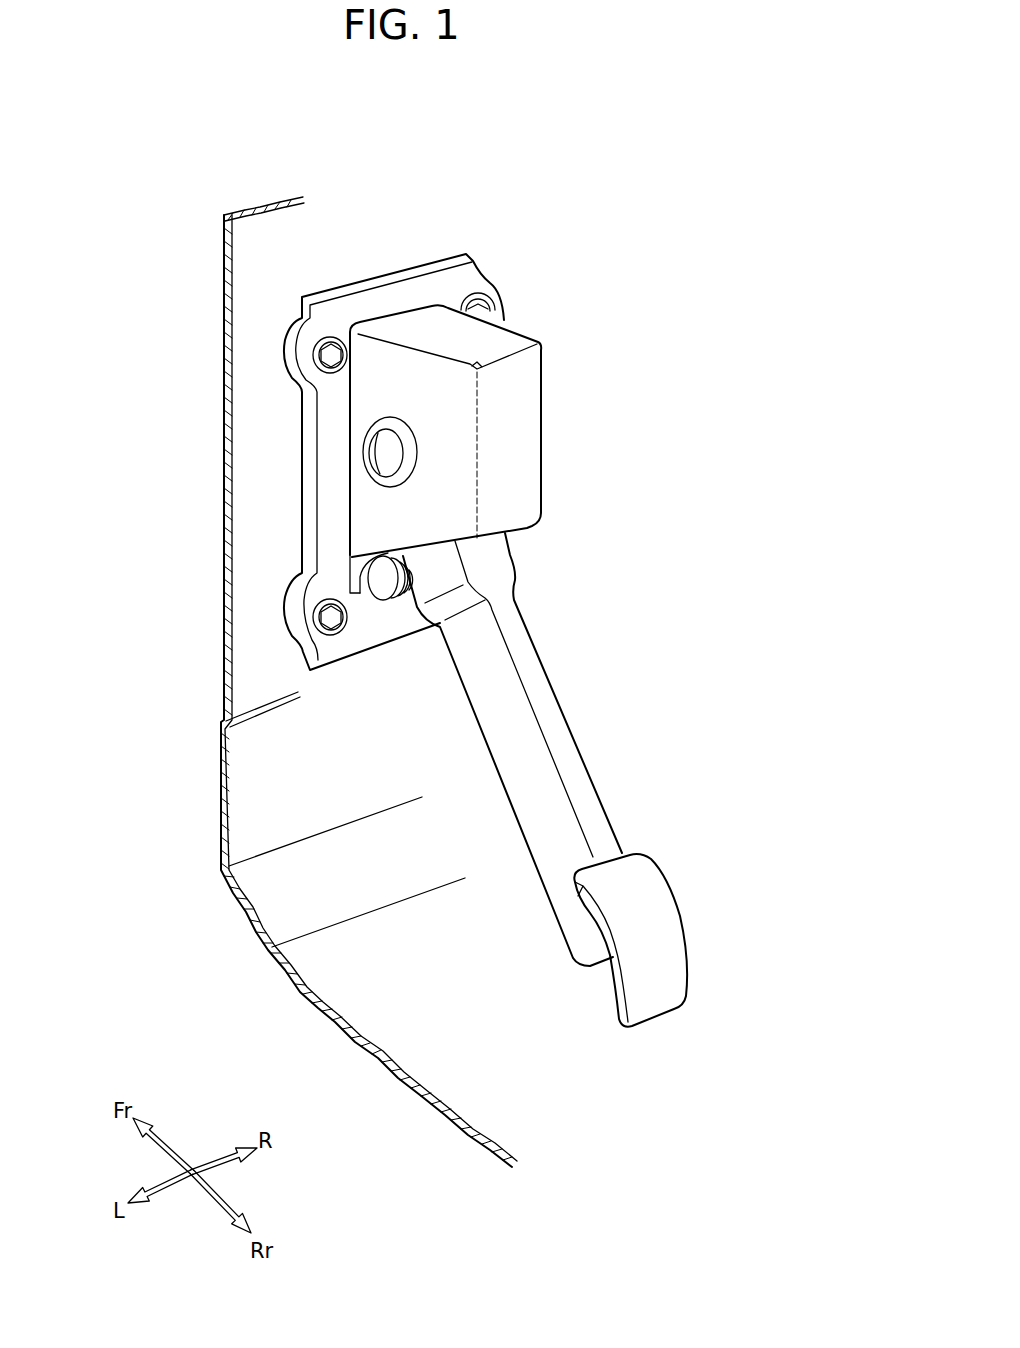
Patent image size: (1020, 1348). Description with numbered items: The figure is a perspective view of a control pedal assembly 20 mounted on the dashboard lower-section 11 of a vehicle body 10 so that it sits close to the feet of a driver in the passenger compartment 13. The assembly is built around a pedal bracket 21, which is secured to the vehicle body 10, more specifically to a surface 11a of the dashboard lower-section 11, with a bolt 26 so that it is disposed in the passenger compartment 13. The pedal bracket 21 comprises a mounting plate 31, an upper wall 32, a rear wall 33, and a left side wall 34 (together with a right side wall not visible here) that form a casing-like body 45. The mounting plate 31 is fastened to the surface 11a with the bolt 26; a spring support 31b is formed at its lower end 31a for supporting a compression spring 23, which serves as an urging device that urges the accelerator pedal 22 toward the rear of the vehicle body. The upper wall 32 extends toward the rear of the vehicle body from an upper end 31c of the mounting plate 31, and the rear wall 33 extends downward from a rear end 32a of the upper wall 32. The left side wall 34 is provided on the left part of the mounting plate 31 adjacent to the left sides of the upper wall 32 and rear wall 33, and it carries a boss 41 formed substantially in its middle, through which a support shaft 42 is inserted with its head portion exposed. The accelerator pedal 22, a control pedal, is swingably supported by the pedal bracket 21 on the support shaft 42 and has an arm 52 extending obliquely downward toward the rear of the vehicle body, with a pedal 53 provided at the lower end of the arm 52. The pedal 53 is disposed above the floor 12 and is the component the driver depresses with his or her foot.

The vehicle body 10 is at (592, 130).
The dashboard lower-section 11 is at (240, 330).
The surface 11a is at (267, 347).
The floor 12 is at (412, 1062).
The passenger compartment 13 is at (731, 668).
The control pedal assembly 20 is at (536, 280).
The pedal bracket 21 is at (553, 373).
The accelerator pedal 22 is at (582, 780).
The compression spring 23 is at (399, 606).
The bolt 26 is at (336, 352).
The mounting plate 31 is at (330, 413).
The lower end 31a is at (421, 625).
The spring support 31b is at (377, 603).
The upper end 31c is at (388, 303).
The upper wall 32 is at (433, 318).
The rear end 32a is at (503, 340).
The rear wall 33 is at (518, 451).
The left side wall 34 is at (378, 520).
The boss 41 is at (396, 432).
The support shaft 42 is at (380, 462).
The casing-like body 45 is at (545, 422).
The arm 52 is at (577, 776).
The pedal 53 is at (665, 925).